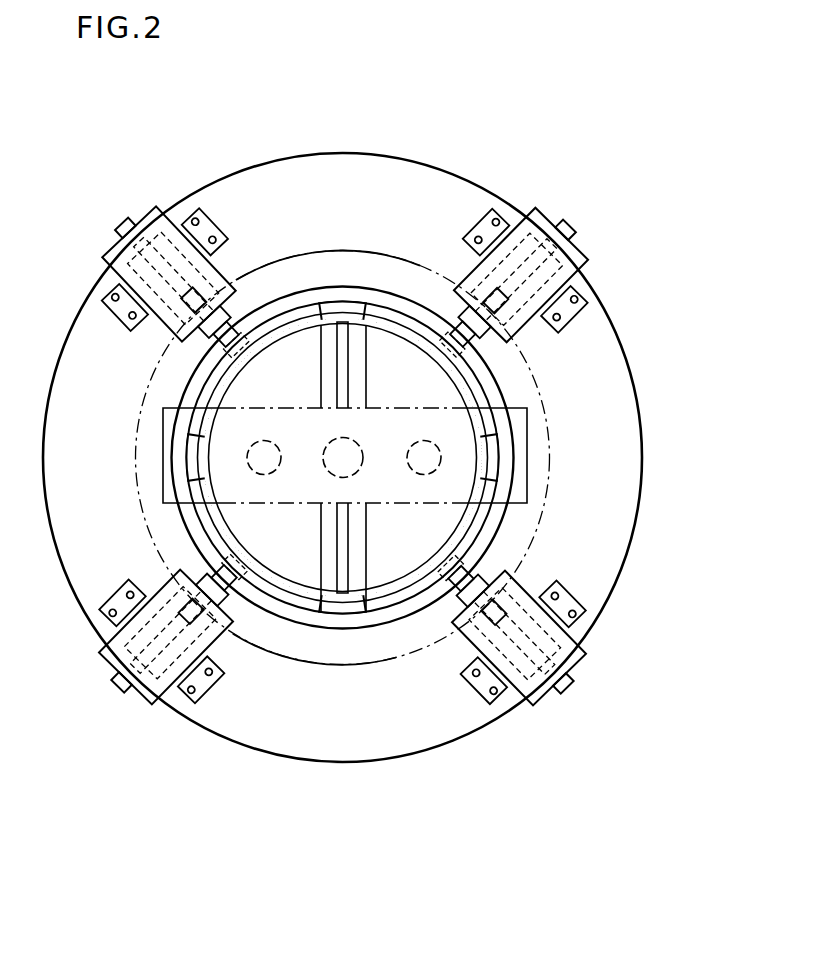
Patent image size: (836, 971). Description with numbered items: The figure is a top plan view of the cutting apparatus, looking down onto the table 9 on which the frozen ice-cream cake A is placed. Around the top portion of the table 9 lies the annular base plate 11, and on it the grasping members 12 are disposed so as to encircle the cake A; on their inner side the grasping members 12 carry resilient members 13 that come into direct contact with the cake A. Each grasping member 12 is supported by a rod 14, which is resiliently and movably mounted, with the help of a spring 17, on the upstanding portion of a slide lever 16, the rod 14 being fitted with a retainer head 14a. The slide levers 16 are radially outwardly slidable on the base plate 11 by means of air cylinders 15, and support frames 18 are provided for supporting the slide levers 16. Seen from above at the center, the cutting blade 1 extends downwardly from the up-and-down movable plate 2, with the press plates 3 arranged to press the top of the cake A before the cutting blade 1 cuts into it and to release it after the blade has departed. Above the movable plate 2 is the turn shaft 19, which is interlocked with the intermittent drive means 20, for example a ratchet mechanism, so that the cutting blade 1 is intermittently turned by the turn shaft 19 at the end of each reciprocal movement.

The cutting blade 1 is at (346, 322).
The movable plate 2 is at (148, 470).
The press plate 3 is at (326, 338).
The table 9 is at (528, 450).
The annular base plate 11 is at (302, 757).
The grasping member 12 is at (195, 399).
The resilient member 13 is at (264, 345).
The rod 14 is at (212, 322).
The retainer head 14a is at (200, 292).
The air cylinder 15 is at (198, 245).
The slide lever 16 is at (158, 207).
The spring 17 is at (222, 349).
The support frame 18 is at (110, 292).
The turn shaft 19 is at (324, 461).
The intermittent drive means 20 is at (343, 248).
The frozen ice-cream cake A is at (396, 592).